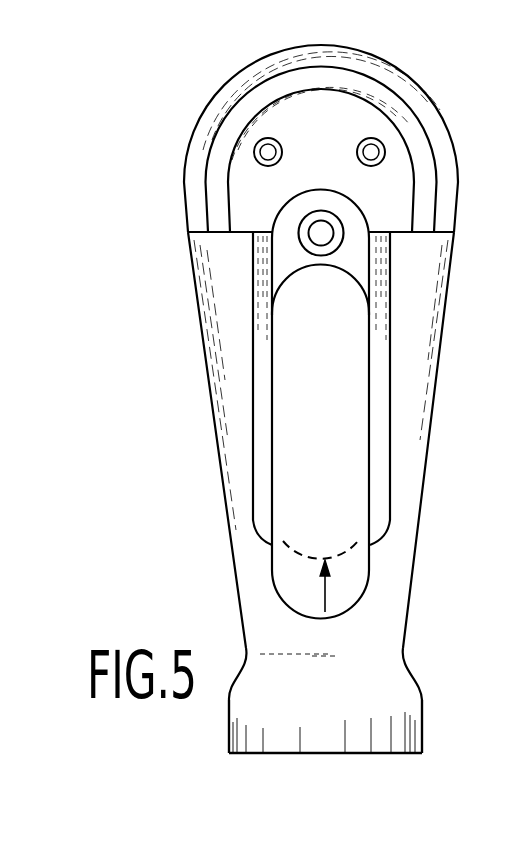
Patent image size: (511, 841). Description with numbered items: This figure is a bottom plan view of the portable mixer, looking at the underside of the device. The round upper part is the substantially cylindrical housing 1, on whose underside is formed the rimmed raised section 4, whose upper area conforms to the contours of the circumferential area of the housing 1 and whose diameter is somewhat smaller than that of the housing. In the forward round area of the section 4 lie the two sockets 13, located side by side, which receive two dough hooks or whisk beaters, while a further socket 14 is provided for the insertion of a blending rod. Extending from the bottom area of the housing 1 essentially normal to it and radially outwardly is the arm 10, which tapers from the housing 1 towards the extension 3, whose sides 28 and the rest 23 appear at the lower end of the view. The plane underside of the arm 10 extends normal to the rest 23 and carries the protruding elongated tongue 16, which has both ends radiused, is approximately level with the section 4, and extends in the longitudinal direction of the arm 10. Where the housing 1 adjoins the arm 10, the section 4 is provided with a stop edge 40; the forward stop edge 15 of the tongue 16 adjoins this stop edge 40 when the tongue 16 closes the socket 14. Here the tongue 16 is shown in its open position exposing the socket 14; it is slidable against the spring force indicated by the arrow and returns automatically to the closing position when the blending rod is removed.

The housing 1 is at (447, 123).
The extension 3 is at (403, 718).
The raised section 4 is at (367, 112).
The arm 10 is at (437, 380).
The sockets 13 is at (355, 150).
The socket 14 is at (343, 216).
The forward stop edge 15 is at (345, 270).
The tongue 16 is at (355, 440).
The rest 23 is at (335, 754).
The sides 28 is at (229, 734).
The stop edge 40 is at (385, 252).